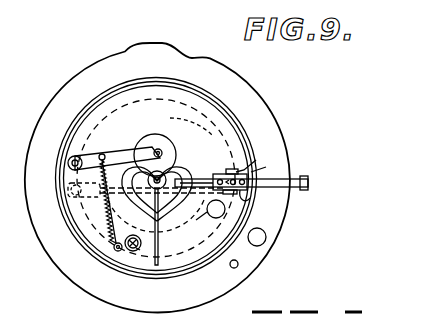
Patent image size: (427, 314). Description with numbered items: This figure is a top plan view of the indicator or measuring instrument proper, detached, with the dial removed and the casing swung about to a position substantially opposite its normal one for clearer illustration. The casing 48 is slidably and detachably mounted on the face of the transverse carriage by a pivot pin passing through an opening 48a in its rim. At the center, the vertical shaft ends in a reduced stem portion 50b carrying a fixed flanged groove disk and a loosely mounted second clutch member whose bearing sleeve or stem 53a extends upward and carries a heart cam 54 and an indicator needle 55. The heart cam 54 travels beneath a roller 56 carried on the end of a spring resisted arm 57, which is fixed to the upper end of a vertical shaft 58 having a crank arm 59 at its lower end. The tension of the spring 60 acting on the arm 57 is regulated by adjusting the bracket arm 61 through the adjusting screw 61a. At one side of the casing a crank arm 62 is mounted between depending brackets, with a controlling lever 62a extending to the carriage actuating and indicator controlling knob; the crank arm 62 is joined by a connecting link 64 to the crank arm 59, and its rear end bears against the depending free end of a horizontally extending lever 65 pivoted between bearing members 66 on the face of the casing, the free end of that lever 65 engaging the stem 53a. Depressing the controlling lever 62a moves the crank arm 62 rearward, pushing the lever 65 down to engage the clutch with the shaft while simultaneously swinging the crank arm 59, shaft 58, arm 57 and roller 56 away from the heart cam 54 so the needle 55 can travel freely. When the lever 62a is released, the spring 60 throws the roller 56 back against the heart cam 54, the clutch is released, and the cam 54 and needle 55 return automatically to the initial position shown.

The casing 48 is at (244, 122).
The opening 48a is at (239, 264).
The reduced stem portion 50b is at (180, 153).
The bearing sleeve or stem 53a is at (183, 172).
The heart cam 54 is at (181, 208).
The indicator needle 55 is at (160, 242).
The roller 56 is at (157, 140).
The spring resisted arm 57 is at (113, 152).
The vertical shaft 58 is at (68, 158).
The crank arm 59 is at (80, 184).
The spring 60 is at (108, 215).
The bracket arm 61 is at (127, 252).
The adjusting screw 61a is at (138, 252).
The crank arm 62 is at (257, 237).
The controlling lever 62a is at (246, 167).
The connecting link 64 is at (210, 210).
The horizontally extending lever 65 is at (257, 158).
The bearing members 66 is at (249, 200).